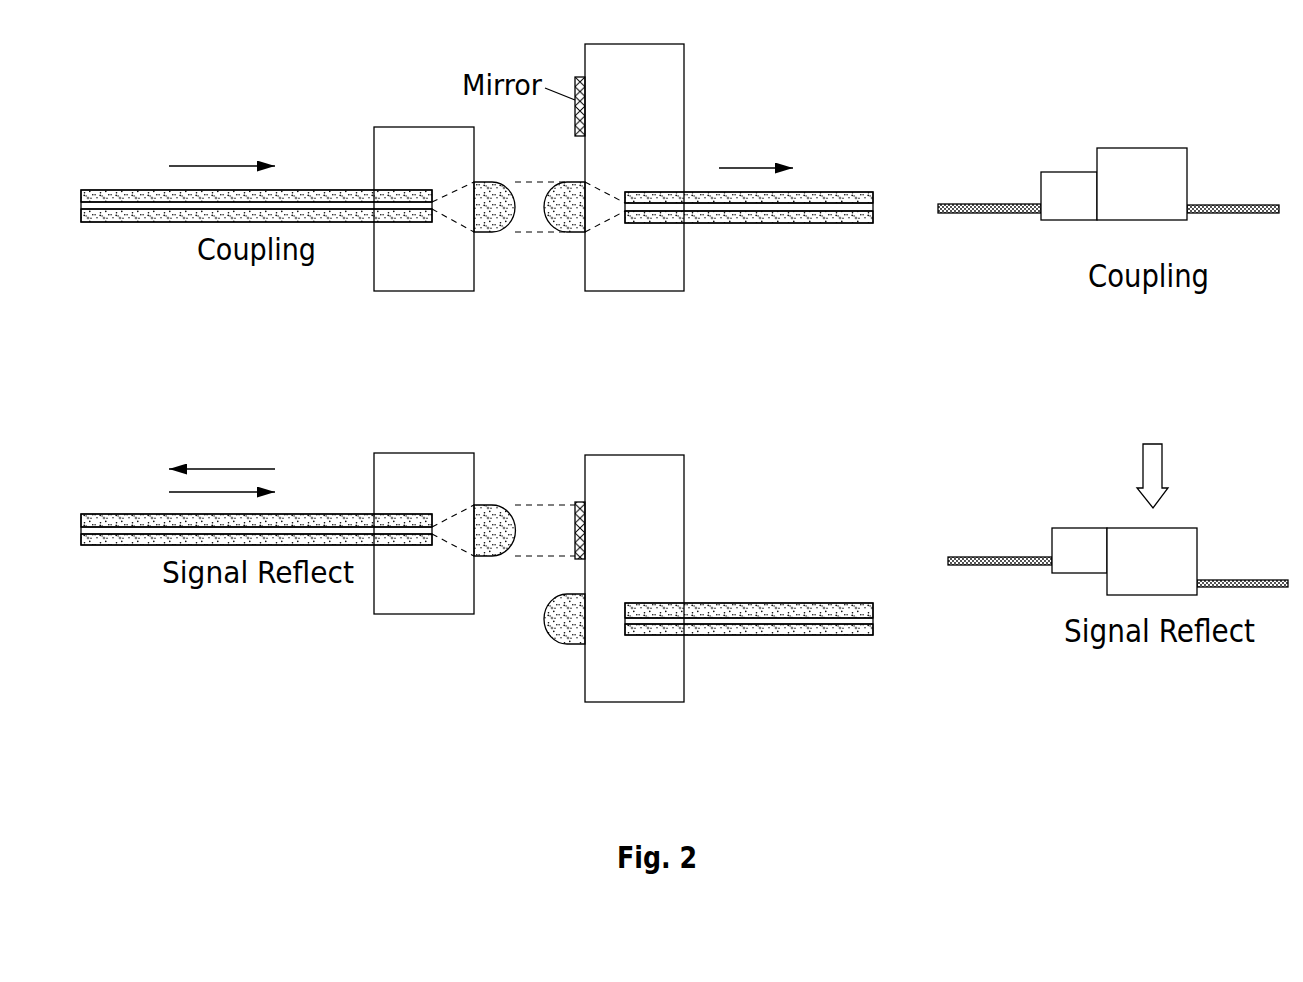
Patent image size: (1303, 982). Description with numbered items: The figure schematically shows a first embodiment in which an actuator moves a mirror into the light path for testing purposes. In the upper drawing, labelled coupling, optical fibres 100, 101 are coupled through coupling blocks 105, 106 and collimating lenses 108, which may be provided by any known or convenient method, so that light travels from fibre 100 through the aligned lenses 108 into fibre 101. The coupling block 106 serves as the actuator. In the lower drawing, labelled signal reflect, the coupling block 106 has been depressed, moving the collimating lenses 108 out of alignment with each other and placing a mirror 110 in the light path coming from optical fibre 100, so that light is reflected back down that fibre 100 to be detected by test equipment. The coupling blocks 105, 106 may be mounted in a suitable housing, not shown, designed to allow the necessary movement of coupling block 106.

The optical fibre 100 is at (153, 193).
The optical fibre 101 is at (808, 198).
The coupling block 105 is at (423, 292).
The coupling block 106 is at (633, 292).
The collimating lens 108 is at (487, 193).
The mirror 110 is at (575, 85).